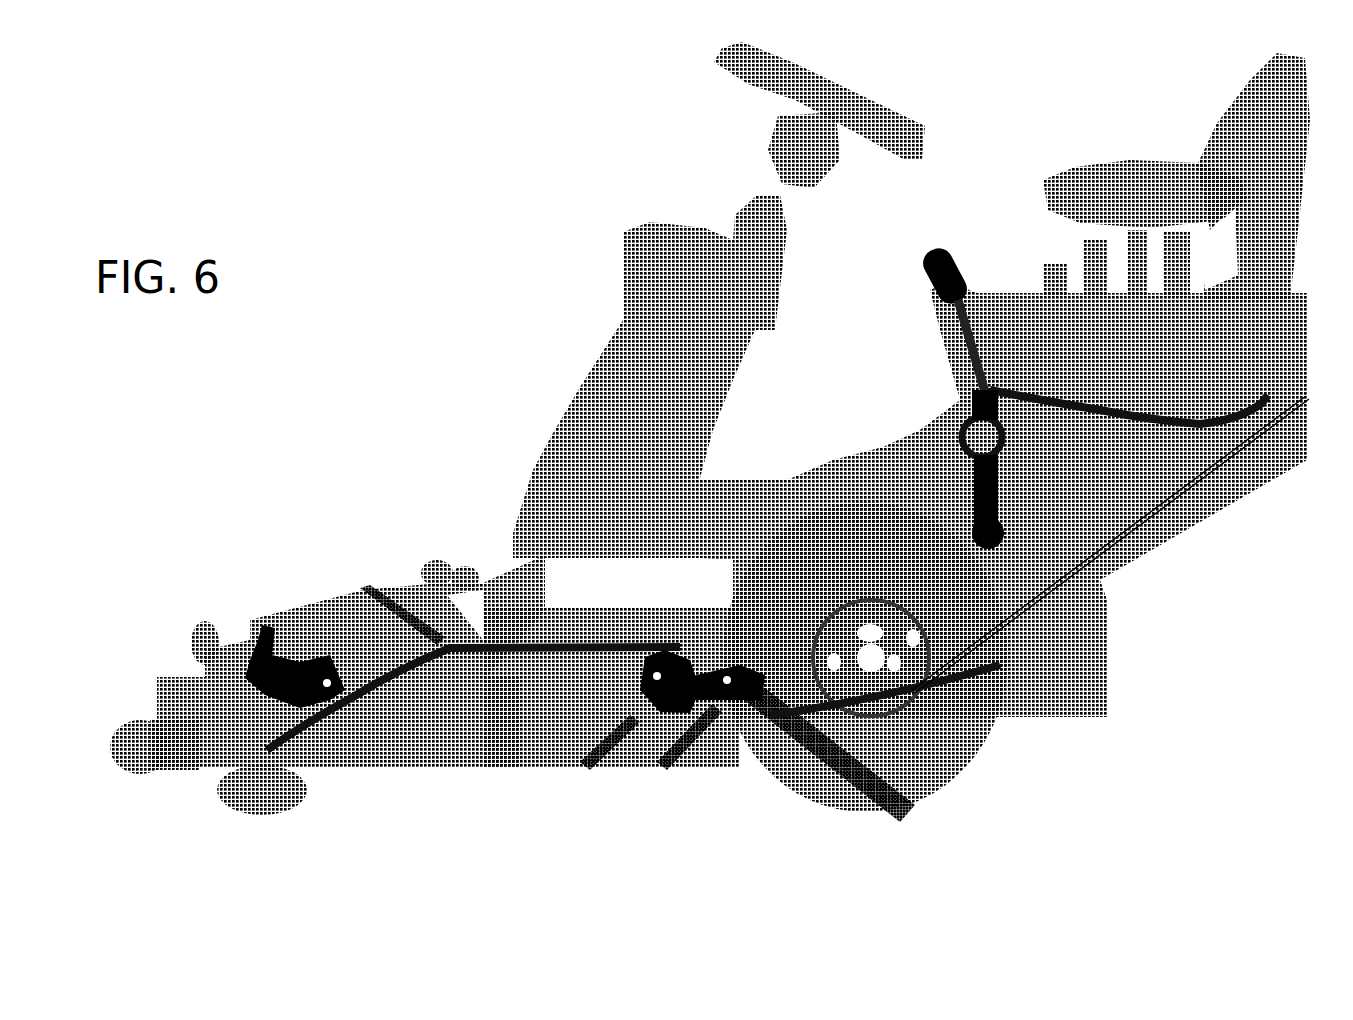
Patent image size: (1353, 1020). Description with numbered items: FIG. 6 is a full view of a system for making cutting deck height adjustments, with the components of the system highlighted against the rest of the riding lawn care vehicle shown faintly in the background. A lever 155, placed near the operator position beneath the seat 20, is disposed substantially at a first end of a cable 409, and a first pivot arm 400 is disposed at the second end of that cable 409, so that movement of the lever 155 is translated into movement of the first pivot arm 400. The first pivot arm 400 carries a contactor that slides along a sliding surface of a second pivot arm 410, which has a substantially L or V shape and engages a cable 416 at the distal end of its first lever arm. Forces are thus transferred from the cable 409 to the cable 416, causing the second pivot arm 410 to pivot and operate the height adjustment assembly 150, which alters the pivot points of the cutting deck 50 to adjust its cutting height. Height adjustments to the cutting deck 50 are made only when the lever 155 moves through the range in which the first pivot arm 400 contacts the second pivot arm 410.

The seat 20 is at (1250, 90).
The cutting deck 50 is at (292, 578).
The height adjustment assembly 150 is at (698, 648).
The lever 155 is at (935, 248).
The first pivot arm 400 is at (775, 713).
The cable 409 is at (1090, 588).
The second pivot arm 410 is at (662, 702).
The cable 416 is at (300, 680).